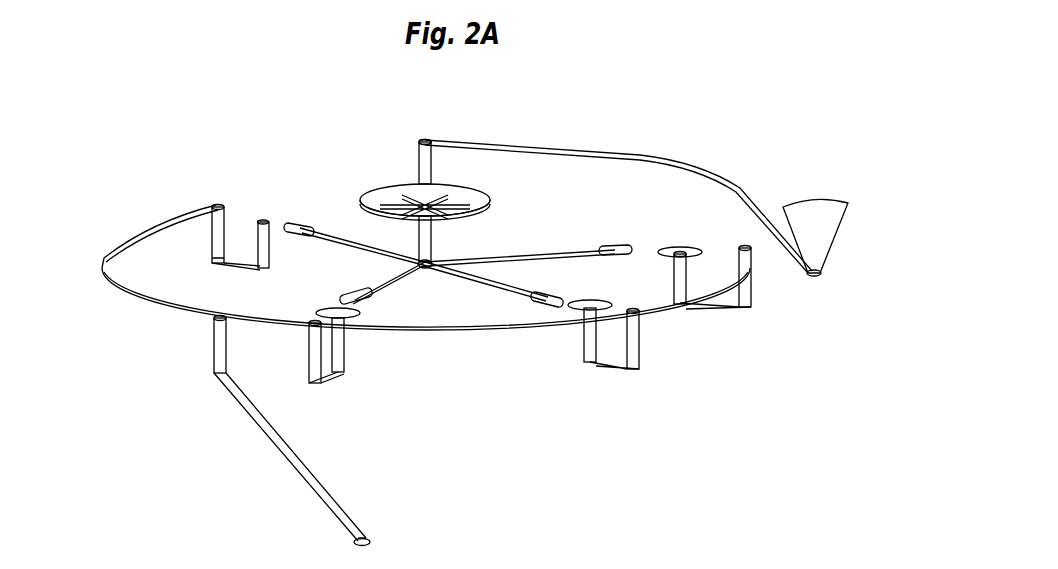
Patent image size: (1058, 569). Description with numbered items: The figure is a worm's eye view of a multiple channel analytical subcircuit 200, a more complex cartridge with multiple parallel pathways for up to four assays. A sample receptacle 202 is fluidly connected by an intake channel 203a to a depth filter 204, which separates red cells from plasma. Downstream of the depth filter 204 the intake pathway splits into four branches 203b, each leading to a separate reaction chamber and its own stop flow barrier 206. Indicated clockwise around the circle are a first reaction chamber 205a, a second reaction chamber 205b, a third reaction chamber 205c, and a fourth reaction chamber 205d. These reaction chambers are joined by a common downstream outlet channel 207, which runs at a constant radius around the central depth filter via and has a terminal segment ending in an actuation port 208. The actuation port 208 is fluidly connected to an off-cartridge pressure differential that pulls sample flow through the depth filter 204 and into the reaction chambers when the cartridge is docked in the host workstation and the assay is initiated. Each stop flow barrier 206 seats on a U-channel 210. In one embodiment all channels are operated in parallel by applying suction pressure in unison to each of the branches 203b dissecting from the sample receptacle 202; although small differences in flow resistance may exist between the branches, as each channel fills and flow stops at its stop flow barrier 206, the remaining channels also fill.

The multiple channel analytical subcircuit 200 is at (437, 103).
The sample receptacle 202 is at (818, 199).
The intake channel 203a is at (655, 151).
The branches 203b is at (406, 289).
The depth filter 204 is at (358, 189).
The first reaction chamber 205a is at (298, 221).
The second reaction chamber 205b is at (620, 244).
The third reaction chamber 205c is at (552, 306).
The fourth reaction chamber 205d is at (350, 295).
The stop flow barrier 206 is at (684, 244).
The common downstream outlet channel 207 is at (140, 227).
The actuation port 208 is at (372, 537).
The U-channel 210 is at (626, 376).